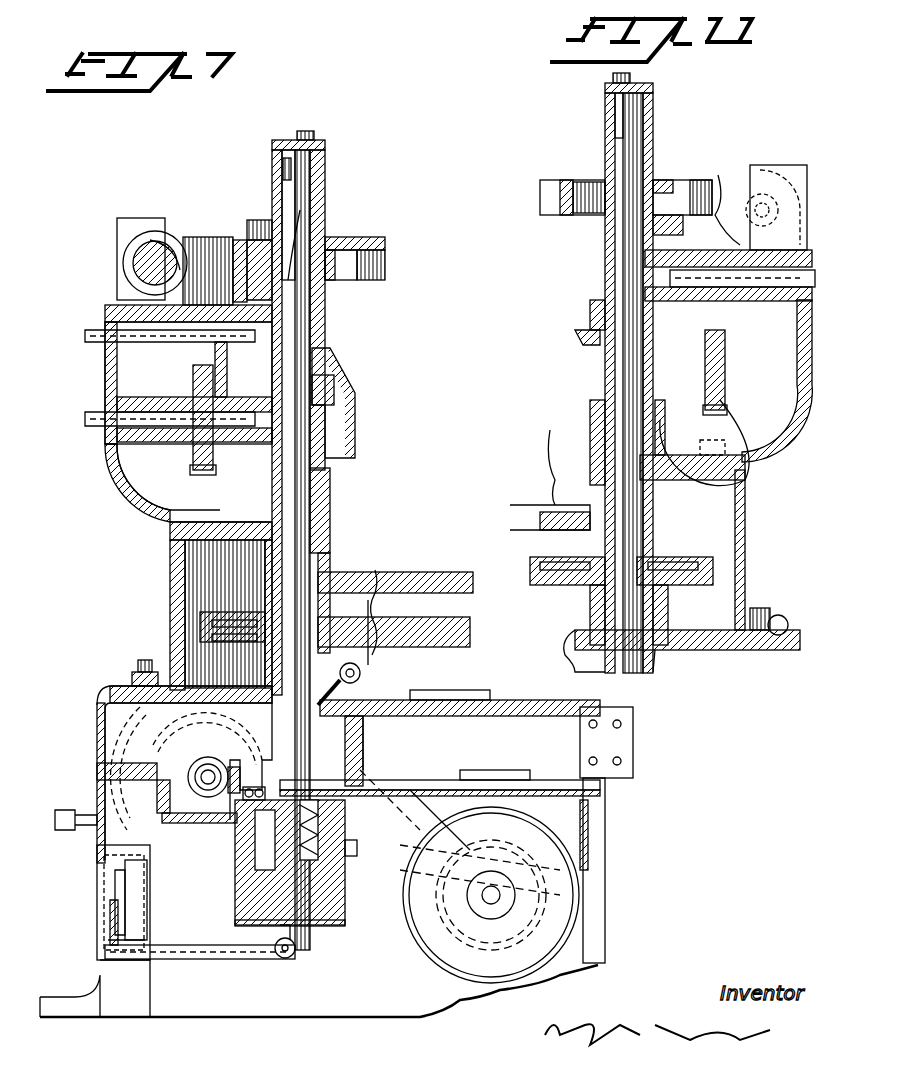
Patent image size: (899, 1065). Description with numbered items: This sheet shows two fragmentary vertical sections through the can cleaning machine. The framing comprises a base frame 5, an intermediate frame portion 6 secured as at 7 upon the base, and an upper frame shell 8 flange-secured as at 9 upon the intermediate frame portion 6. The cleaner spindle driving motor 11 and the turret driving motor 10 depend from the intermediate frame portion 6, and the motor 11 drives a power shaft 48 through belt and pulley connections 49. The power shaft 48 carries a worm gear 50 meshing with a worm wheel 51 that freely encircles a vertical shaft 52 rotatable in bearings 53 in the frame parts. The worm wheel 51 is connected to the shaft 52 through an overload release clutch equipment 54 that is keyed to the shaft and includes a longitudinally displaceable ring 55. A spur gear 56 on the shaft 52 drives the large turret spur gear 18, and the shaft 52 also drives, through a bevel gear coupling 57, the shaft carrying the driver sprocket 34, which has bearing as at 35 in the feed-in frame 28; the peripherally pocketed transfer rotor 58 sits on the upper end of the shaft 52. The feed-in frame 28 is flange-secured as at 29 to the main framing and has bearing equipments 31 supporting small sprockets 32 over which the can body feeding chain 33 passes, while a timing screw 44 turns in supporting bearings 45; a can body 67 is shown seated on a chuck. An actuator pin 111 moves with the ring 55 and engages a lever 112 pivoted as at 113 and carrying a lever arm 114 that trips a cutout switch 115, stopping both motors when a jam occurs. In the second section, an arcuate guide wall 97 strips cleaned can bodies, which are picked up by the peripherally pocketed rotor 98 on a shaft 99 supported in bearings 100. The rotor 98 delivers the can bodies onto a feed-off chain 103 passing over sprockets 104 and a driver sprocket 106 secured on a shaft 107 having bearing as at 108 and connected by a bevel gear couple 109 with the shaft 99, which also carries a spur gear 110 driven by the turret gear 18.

In FIG. 7, the base frame 5 is at (95, 1000).
In FIG. 7, the intermediate frame portion 6 is at (97, 717).
In FIG. 7, the securing flange connection 7 is at (115, 760).
In FIG. 7, the upper frame shell 8 is at (170, 535).
In FIG. 11, the upper frame shell 8 is at (745, 552).
In FIG. 7, the flange securing point 9 is at (135, 680).
In FIG. 11, the flange securing point 9 is at (780, 645).
In FIG. 7, the feeding mechanism and turret driving motor 10 is at (123, 994).
In FIG. 7, the cleaner spindle driving motor 11 is at (475, 950).
In FIG. 7, the large spur gear 18 is at (430, 625).
In FIG. 7, the frame 28 is at (125, 470).
In FIG. 11, the frame 28 is at (805, 420).
In FIG. 7, the flange securing point 29 is at (335, 490).
In FIG. 7, the bearing equipments 31 is at (310, 330).
In FIG. 7, the small sprockets 32 is at (135, 320).
In FIG. 7, the can body feeding chain 33 is at (282, 240).
In FIG. 7, the driver sprocket 34 is at (200, 456).
In FIG. 7, the bearing 35 is at (140, 400).
In FIG. 7, the timing screw 44 is at (182, 240).
In FIG. 7, the supporting bearings 45 is at (125, 262).
In FIG. 7, the power shaft 48 is at (208, 790).
In FIG. 7, the belt and pulley connections 49 is at (560, 885).
In FIG. 7, the worm gear 50 is at (225, 762).
In FIG. 7, the worm wheel 51 is at (375, 765).
In FIG. 7, the shaft 52 is at (310, 550).
In FIG. 7, the bearings 53 is at (330, 735).
In FIG. 7, the overload release clutch equipment 54 is at (345, 860).
In FIG. 7, the longitudinally displaceable ring 55 is at (400, 775).
In FIG. 7, the spur gear 56 is at (225, 620).
In FIG. 7, the bevel gear coupling 57 is at (330, 440).
In FIG. 7, the peripherally pocketed transfer rotor 58 is at (340, 237).
In FIG. 7, the can body 67 is at (150, 240).
In FIG. 11, the arcuate guide wall 97 is at (760, 170).
In FIG. 11, the peripherally pocketed rotor 98 is at (570, 180).
In FIG. 11, the shaft 99 is at (618, 373).
In FIG. 11, the bearings 100 is at (605, 430).
In FIG. 11, the feed-off chain 103 is at (745, 480).
In FIG. 11, the sprockets 104 is at (720, 250).
In FIG. 11, the driver sprocket 106 is at (725, 405).
In FIG. 11, the shaft 107 is at (780, 287).
In FIG. 11, the bearing 108 is at (712, 395).
In FIG. 11, the bevel gear couple 109 is at (580, 333).
In FIG. 11, the spur gear 110 is at (680, 568).
In FIG. 7, the actuator pin 111 is at (250, 940).
In FIG. 7, the lever 112 is at (284, 960).
In FIG. 7, the pivot support 113 is at (200, 965).
In FIG. 7, the lever arm 114 is at (108, 940).
In FIG. 7, the cutout switch 115 is at (125, 880).